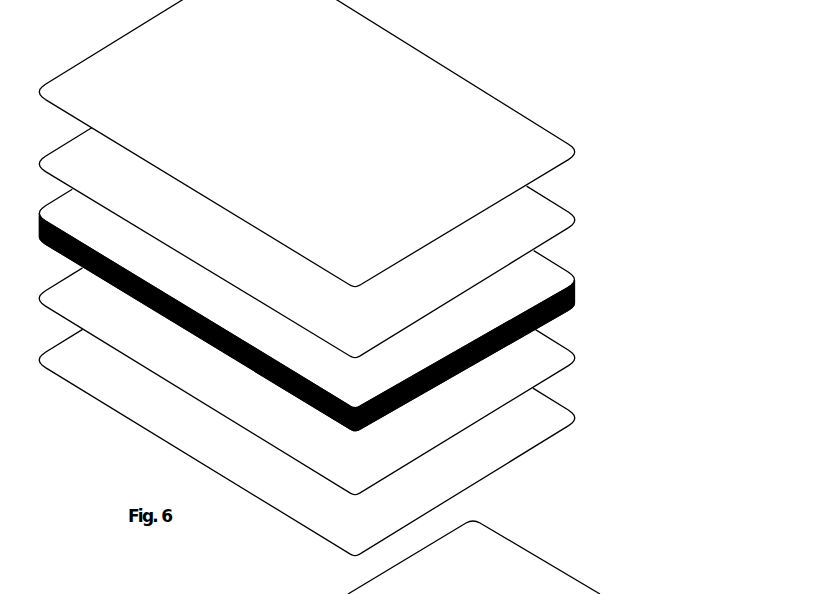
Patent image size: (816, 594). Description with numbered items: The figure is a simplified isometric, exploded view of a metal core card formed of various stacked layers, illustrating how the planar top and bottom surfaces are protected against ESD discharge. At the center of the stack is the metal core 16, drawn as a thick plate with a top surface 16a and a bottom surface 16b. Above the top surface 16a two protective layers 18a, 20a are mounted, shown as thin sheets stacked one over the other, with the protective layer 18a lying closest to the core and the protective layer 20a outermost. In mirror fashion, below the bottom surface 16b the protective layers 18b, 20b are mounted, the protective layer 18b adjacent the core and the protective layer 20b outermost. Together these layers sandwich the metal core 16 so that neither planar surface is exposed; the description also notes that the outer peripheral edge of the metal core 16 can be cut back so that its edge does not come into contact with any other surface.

The protective layer 20a is at (535, 155).
The protective layer 18a is at (535, 229).
The top surface 16a is at (535, 278).
The metal core 16 is at (560, 312).
The bottom surface 16b is at (533, 322).
The protective layer 18b is at (535, 382).
The protective layer 20b is at (535, 443).